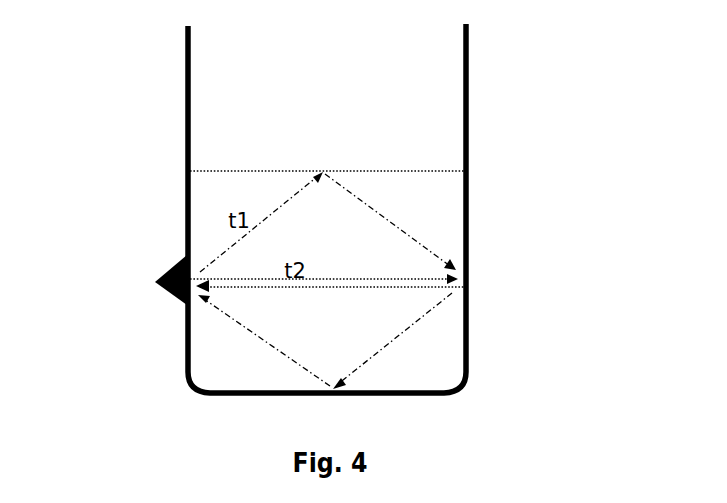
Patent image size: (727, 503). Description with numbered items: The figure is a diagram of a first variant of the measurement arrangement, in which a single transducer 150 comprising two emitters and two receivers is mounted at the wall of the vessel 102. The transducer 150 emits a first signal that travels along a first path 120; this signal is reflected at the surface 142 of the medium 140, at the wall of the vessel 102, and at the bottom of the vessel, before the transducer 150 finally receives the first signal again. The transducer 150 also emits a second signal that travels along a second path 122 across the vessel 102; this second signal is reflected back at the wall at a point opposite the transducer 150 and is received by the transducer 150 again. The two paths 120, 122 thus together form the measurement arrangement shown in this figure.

The vessel 102 is at (468, 115).
The surface of the medium 142 is at (222, 170).
The first path 120 is at (292, 193).
The medium 140 is at (353, 178).
The second path 122 is at (398, 287).
The transducer 150 is at (185, 299).